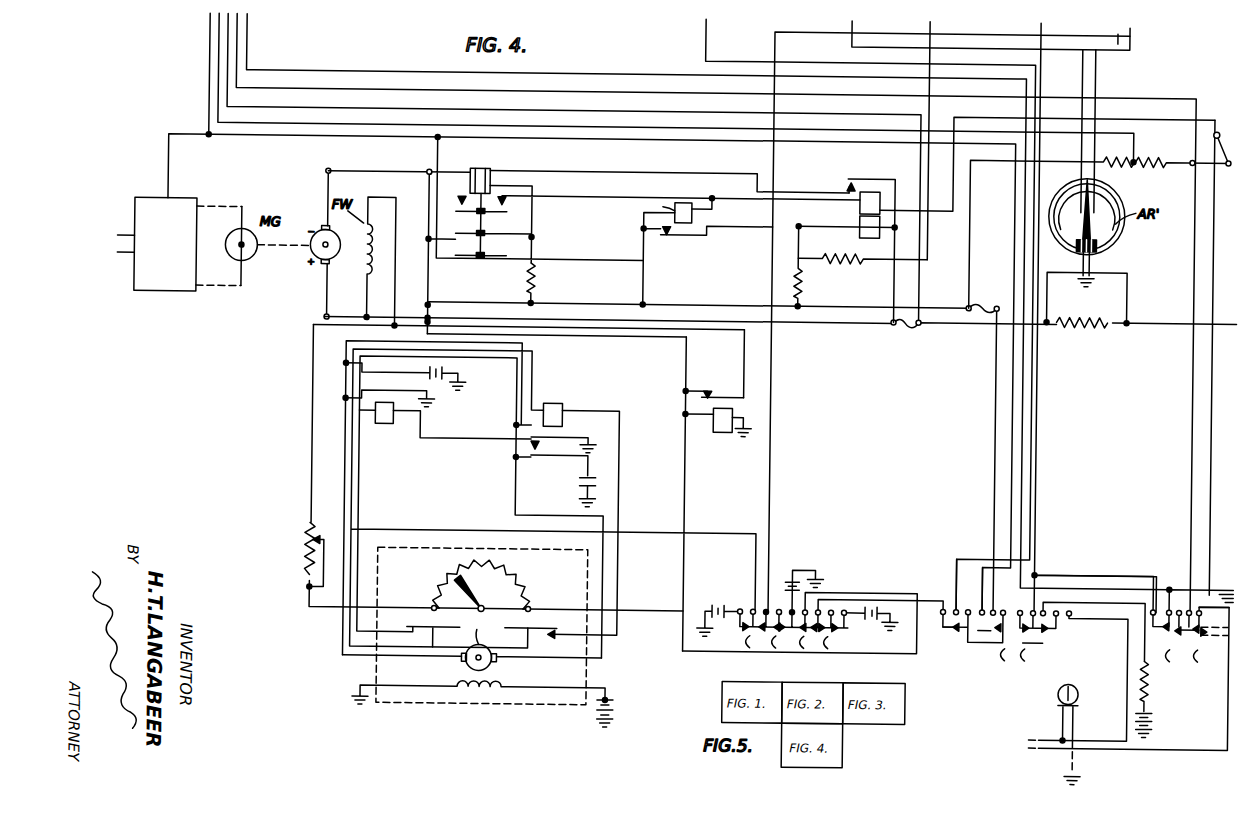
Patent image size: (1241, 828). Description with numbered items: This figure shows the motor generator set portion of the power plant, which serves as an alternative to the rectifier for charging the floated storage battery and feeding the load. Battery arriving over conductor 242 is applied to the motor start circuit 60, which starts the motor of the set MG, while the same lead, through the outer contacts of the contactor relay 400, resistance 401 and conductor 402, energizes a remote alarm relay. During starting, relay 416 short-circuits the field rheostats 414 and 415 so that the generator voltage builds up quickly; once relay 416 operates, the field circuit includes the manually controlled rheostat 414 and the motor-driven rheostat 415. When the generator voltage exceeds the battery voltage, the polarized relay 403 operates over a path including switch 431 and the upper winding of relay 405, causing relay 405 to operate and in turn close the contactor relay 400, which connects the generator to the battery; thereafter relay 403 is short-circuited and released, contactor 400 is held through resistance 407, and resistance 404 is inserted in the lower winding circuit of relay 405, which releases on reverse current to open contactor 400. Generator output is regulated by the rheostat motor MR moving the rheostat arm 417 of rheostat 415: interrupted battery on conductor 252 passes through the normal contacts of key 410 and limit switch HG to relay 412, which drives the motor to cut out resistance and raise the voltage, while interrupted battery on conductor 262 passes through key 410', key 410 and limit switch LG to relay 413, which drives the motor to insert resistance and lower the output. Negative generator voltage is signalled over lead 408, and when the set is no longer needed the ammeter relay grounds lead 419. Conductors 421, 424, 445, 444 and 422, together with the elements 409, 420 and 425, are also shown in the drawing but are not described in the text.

The motor start circuit 60 is at (191, 298).
The conductor 242 is at (206, 40).
The conductor 421 is at (216, 70).
The conductor 424 is at (281, 92).
The lead 408 is at (706, 50).
The lead 419 is at (852, 28).
The conductor 402 is at (930, 28).
The conductor 262 is at (1041, 28).
The conductor 252 is at (1118, 38).
The meter leads 445 is at (1096, 80).
The conductor 444 is at (1240, 70).
The switch 431 is at (1219, 126).
The contactor relay 400 is at (490, 172).
The polarized relay 403 is at (694, 218).
The relay 405 is at (862, 208).
The resistance 407 is at (540, 282).
The resistance 404 is at (805, 283).
The resistance 401 is at (856, 262).
The relay 412 is at (390, 428).
The relay 413 is at (560, 406).
The relay 416 is at (726, 433).
The manually controlled rheostat 414 is at (311, 548).
The motor-driven rheostat 415 is at (478, 637).
The rheostat arm 417 is at (489, 609).
The key 410 is at (813, 613).
The key 410' is at (1046, 650).
The switch contact 409 is at (996, 610).
The signal lamp 420 is at (1066, 692).
The switch 425 is at (1131, 625).
The conductor 422 is at (1240, 585).